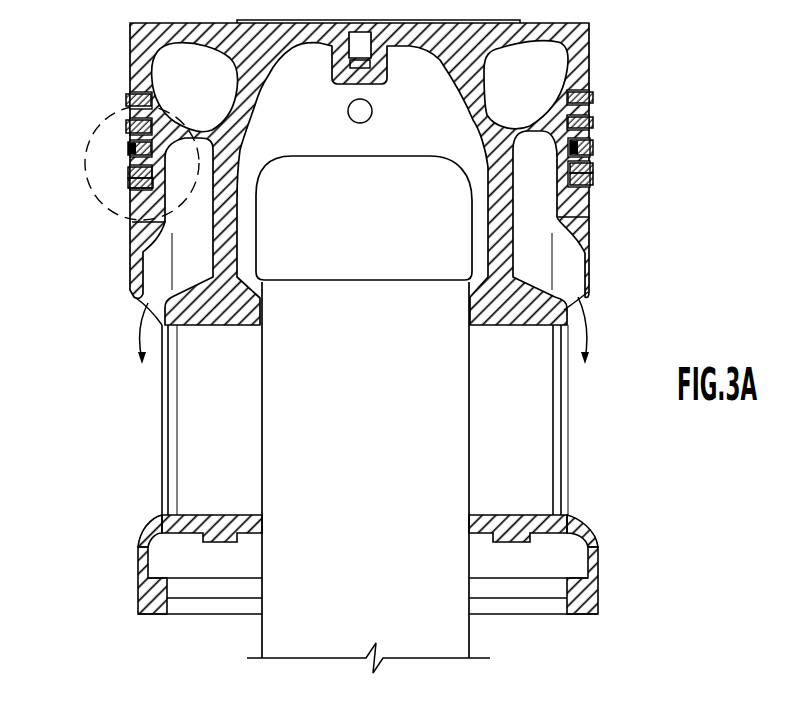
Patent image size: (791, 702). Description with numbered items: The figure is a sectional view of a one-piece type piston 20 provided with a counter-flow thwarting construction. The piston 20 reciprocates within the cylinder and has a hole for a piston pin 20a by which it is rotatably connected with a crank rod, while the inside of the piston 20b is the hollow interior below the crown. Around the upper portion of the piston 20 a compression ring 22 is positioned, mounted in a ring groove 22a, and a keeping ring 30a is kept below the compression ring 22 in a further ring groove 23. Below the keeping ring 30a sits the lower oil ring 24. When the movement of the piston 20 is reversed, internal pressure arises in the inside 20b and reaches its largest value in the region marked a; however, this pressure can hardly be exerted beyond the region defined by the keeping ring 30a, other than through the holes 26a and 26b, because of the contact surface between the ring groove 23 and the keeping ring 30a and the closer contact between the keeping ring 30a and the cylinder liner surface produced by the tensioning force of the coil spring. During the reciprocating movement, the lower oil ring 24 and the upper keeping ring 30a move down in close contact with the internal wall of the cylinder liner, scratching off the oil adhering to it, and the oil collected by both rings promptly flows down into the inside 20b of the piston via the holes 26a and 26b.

The piston 20 is at (300, 342).
The hole for a piston pin 20a is at (545, 474).
The inside of the piston 20b is at (388, 230).
The compression ring 22 is at (593, 98).
The ring groove 22a is at (127, 83).
The ring groove 23 is at (128, 146).
The oil ring 24 is at (128, 183).
The hole 26a is at (128, 167).
The hole 26b is at (128, 200).
The keeping ring 30a is at (128, 151).